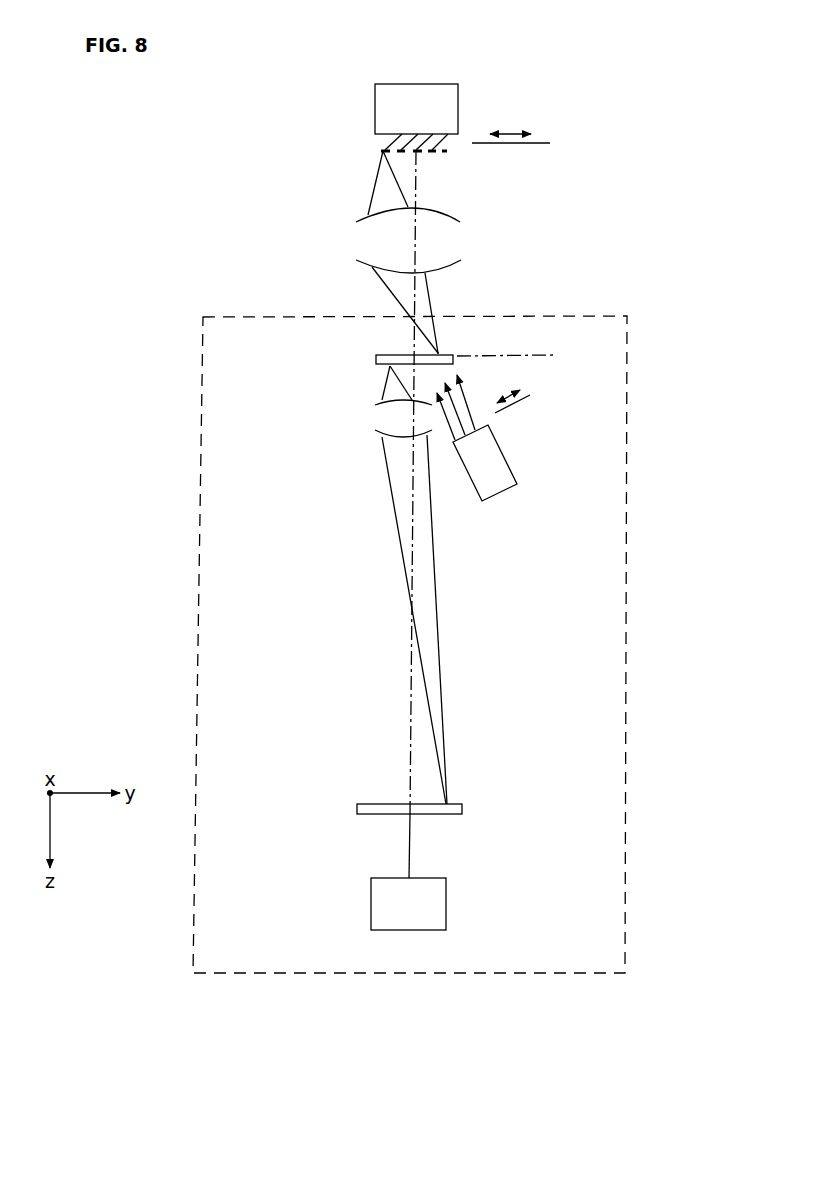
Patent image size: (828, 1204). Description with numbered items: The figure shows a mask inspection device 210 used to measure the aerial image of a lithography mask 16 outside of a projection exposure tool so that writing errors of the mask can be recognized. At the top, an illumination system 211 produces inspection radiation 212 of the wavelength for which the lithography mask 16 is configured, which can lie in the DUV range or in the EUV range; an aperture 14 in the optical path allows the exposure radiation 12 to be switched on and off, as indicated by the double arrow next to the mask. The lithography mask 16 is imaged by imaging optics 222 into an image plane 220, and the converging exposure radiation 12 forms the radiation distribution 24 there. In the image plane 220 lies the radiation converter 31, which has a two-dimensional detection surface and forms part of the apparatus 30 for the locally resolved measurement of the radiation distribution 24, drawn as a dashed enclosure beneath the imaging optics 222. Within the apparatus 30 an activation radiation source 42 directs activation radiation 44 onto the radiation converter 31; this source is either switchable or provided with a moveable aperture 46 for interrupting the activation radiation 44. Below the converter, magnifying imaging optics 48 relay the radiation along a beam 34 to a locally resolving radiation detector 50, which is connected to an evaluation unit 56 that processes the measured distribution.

The mask inspection device 210 is at (646, 249).
The illumination system 211 is at (414, 83).
The inspection radiation 212 is at (375, 143).
The lithography mask 16 is at (450, 152).
The aperture 14 is at (515, 143).
The imaging optics 222 is at (467, 240).
The exposure radiation 12 is at (429, 303).
The radiation distribution 24 is at (444, 344).
The apparatus for the locally resolved measurement of the radiation distribution 30 is at (627, 563).
The image plane 220 is at (538, 352).
The radiation converter 31 is at (376, 358).
The magnifying imaging optics 48 is at (372, 424).
The activation radiation 44 is at (467, 396).
The moveable aperture 46 is at (517, 404).
The activation radiation source 42 is at (503, 452).
The detection beam 34 is at (402, 558).
The locally resolving radiation detector 50 is at (365, 805).
The evaluation unit 56 is at (380, 904).